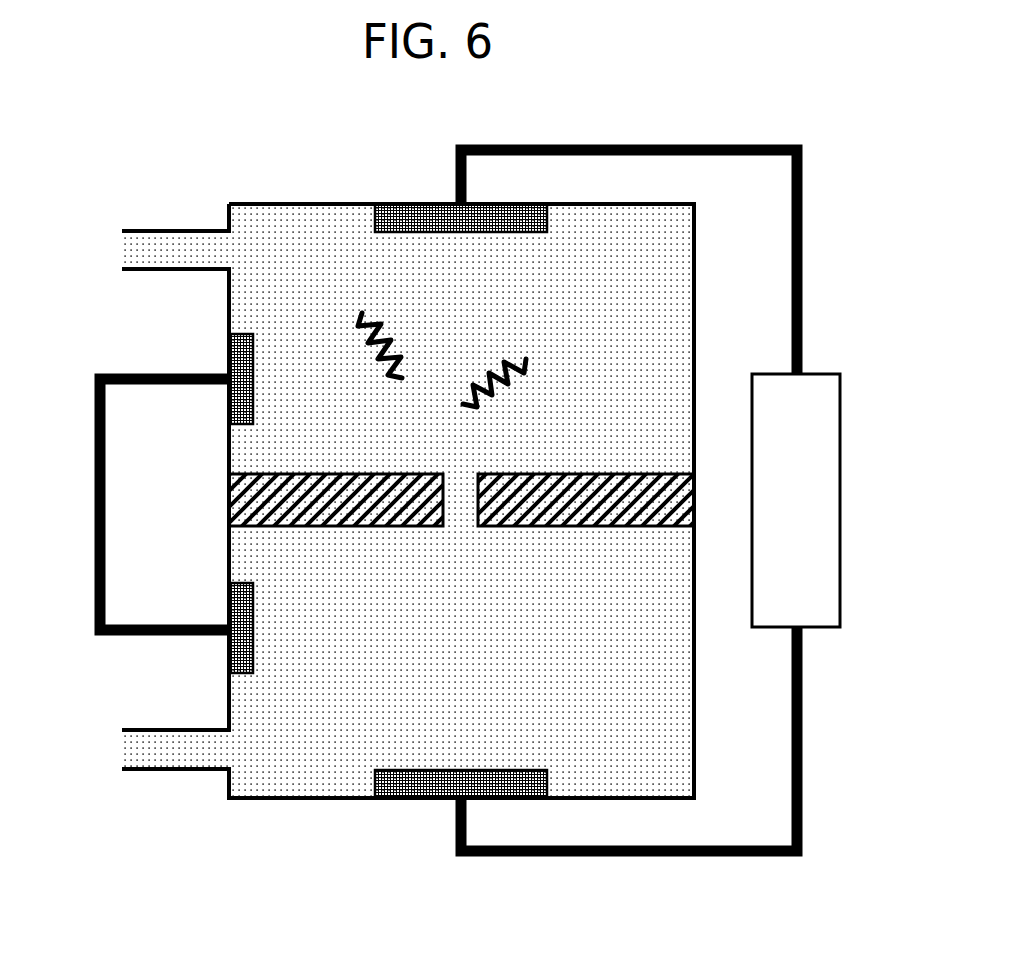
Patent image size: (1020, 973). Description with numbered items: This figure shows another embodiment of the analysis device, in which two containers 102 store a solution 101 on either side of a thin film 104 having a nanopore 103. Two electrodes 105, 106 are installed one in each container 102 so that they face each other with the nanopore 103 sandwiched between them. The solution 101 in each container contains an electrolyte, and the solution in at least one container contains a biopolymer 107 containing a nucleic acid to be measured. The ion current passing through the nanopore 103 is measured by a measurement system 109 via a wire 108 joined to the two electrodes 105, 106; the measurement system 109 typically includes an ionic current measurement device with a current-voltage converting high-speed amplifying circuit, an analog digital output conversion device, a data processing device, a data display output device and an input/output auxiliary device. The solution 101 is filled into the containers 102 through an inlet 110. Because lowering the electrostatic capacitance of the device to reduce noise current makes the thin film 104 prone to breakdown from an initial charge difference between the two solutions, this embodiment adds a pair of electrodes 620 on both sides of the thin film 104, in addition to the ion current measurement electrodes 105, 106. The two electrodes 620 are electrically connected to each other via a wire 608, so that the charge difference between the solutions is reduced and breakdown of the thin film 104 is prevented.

The solution 101 is at (237, 297).
The container 102 is at (267, 200).
The nanopore 103 is at (458, 530).
The thin film 104 is at (697, 499).
The electrode 105 is at (418, 203).
The electrode 106 is at (415, 800).
The biopolymer 107 is at (528, 360).
The wire 108 is at (620, 145).
The measurement system 109 is at (828, 500).
The inlet 110 is at (130, 252).
The wire 608 is at (93, 498).
The electrode 620 is at (225, 348).